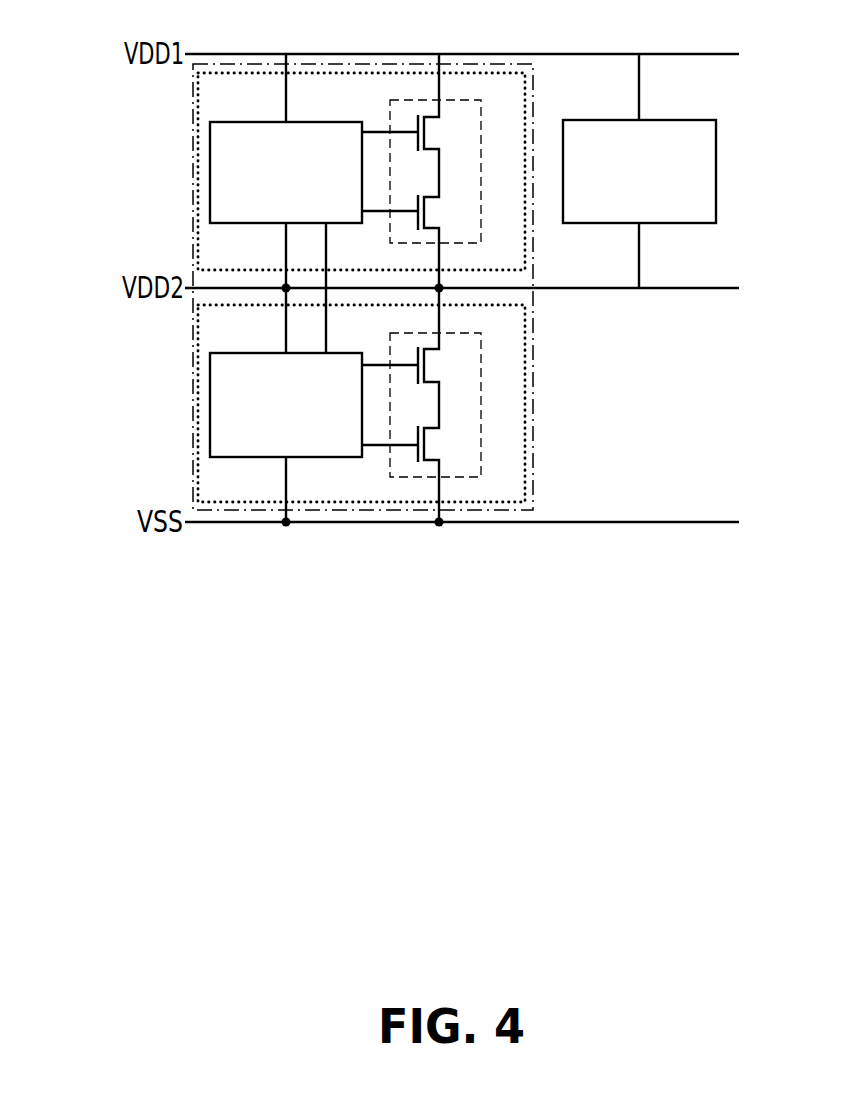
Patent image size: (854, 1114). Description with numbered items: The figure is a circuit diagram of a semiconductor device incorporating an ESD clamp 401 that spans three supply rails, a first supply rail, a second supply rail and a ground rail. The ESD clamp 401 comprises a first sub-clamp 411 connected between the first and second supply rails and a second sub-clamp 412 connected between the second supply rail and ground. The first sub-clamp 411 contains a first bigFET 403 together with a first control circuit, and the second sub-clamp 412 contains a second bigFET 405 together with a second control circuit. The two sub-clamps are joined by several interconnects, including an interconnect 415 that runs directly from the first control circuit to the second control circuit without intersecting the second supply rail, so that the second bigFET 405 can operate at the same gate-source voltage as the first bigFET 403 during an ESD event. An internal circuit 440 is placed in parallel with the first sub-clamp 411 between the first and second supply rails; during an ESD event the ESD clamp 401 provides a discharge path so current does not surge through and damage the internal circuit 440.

The ESD clamp 401 is at (533, 362).
The first bigFET 403 is at (468, 100).
The second bigFET 405 is at (468, 477).
The first sub-clamp 411 is at (198, 170).
The second sub-clamp 412 is at (198, 405).
The interconnect 415 is at (326, 340).
The internal circuit 440 is at (716, 172).